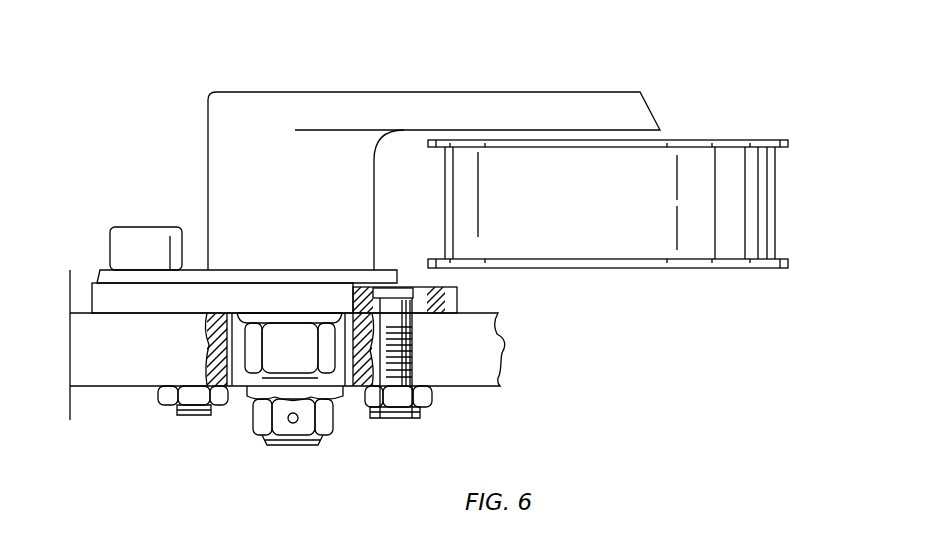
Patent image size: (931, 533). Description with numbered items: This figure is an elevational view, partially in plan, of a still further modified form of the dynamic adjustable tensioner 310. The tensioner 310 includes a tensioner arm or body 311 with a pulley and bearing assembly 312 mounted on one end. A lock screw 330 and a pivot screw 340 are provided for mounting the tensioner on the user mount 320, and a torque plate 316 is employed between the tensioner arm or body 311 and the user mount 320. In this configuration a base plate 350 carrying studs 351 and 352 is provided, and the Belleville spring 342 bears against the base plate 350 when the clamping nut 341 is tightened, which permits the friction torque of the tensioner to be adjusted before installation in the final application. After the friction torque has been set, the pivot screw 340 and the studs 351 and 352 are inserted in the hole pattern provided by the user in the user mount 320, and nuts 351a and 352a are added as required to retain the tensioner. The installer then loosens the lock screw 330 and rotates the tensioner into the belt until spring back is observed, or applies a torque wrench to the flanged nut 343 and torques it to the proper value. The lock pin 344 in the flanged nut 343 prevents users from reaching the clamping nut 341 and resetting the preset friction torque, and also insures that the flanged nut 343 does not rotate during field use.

The dynamic adjustable tensioner 310 is at (473, 69).
The tensioner arm or body 311 is at (327, 108).
The pulley and bearing assembly 312 is at (662, 250).
The torque plate 316 is at (108, 278).
The user mount 320 is at (490, 352).
The lock screw 330 is at (137, 227).
The pivot screw 340 is at (295, 445).
The clamping nut 341 is at (250, 362).
The Belleville spring 342 is at (318, 313).
The flanged nut 343 is at (260, 418).
The lock pin 344 is at (291, 424).
The base plate 350 is at (460, 295).
The stud 351 is at (178, 410).
The nut 351a is at (158, 397).
The stud 352 is at (410, 412).
The nut 352a is at (373, 398).